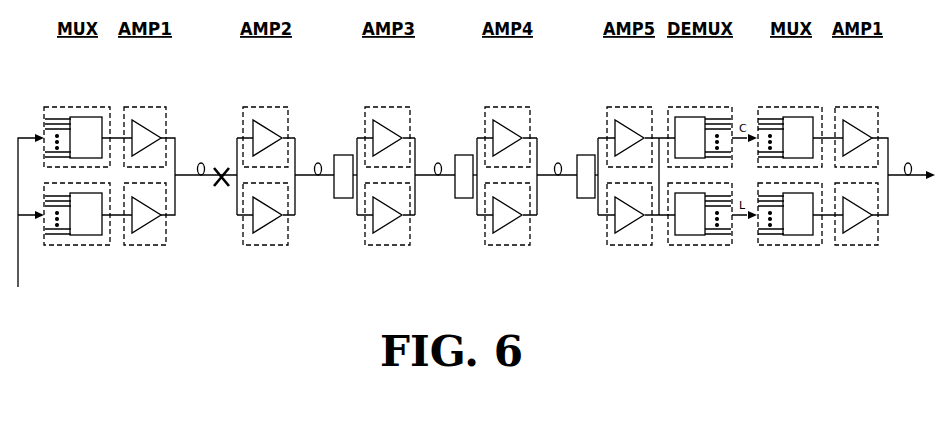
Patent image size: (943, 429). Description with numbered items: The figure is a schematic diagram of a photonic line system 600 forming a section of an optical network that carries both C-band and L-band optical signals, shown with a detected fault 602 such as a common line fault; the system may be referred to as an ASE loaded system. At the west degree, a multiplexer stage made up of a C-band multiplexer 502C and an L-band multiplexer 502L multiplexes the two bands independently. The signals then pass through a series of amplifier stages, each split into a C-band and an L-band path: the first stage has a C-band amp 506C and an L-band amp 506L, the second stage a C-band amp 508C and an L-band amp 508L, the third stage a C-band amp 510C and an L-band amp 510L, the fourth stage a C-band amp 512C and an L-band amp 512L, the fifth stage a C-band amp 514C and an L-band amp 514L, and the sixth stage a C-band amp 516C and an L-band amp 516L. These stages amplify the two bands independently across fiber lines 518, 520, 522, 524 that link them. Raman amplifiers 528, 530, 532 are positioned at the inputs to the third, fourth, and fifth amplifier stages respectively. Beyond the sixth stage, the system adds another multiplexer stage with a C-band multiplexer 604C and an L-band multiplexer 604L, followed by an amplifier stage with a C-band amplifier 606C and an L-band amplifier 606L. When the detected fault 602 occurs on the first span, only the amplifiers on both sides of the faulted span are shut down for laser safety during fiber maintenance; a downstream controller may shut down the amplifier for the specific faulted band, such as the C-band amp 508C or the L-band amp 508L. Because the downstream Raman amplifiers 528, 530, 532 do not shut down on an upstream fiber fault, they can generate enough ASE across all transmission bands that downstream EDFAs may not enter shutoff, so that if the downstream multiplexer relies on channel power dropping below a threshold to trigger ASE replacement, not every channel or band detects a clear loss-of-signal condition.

The photonic line system 600 is at (198, 320).
The C-band multiplexer 502C is at (88, 107).
The L-band multiplexer 502L is at (60, 246).
The C-band amp 506C is at (150, 107).
The L-band amp 506L is at (140, 246).
The C-band amp 508C is at (278, 107).
The L-band amp 508L is at (262, 246).
The C-band amp 510C is at (398, 107).
The L-band amp 510L is at (367, 238).
The C-band amp 512C is at (518, 107).
The L-band amp 512L is at (495, 246).
The C-band amp 514C is at (640, 107).
The L-band amp 514L is at (622, 246).
The C-band amp 516C is at (710, 107).
The L-band amp 516L is at (685, 246).
The C-band multiplexer 604C is at (790, 107).
The L-band multiplexer 604L is at (775, 246).
The C-band amplifier 606C is at (855, 107).
The L-band amplifier 606L is at (852, 246).
The fiber line 518 is at (183, 177).
The fiber line 520 is at (298, 177).
The fiber line 522 is at (420, 177).
The fiber line 524 is at (540, 177).
The Raman amplifier 528 is at (343, 155).
The Raman amplifier 530 is at (465, 155).
The Raman amplifier 532 is at (587, 155).
The detected fault 602 is at (223, 170).